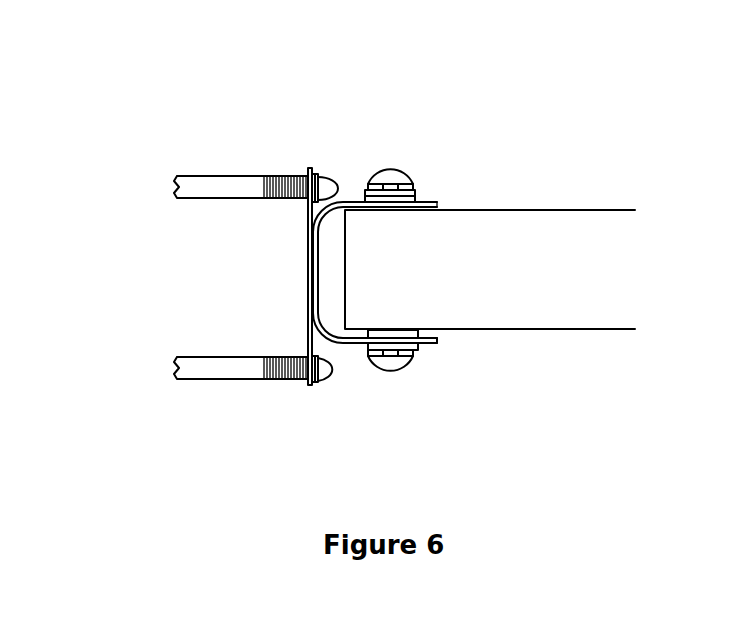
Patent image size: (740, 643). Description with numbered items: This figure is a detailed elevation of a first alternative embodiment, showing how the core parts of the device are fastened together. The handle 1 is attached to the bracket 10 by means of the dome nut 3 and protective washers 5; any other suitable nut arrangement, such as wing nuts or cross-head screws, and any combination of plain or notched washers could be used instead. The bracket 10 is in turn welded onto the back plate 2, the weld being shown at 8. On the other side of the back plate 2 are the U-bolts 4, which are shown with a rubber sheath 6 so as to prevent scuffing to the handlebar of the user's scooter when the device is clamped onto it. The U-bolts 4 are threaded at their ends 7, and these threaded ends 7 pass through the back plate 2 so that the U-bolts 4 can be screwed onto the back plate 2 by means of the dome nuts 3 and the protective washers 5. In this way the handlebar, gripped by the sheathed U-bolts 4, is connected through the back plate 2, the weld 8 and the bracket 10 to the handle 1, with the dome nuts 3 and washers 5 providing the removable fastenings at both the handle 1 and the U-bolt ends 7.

The handle 1 is at (623, 330).
The back plate 2 is at (311, 168).
The dome nut 3 is at (388, 371).
The U-bolt 4 is at (262, 178).
The protective washer 5 is at (412, 188).
The rubber sheath 6 is at (174, 185).
The threaded end 7 is at (287, 176).
The weld 8 is at (307, 292).
The bracket 10 is at (436, 341).